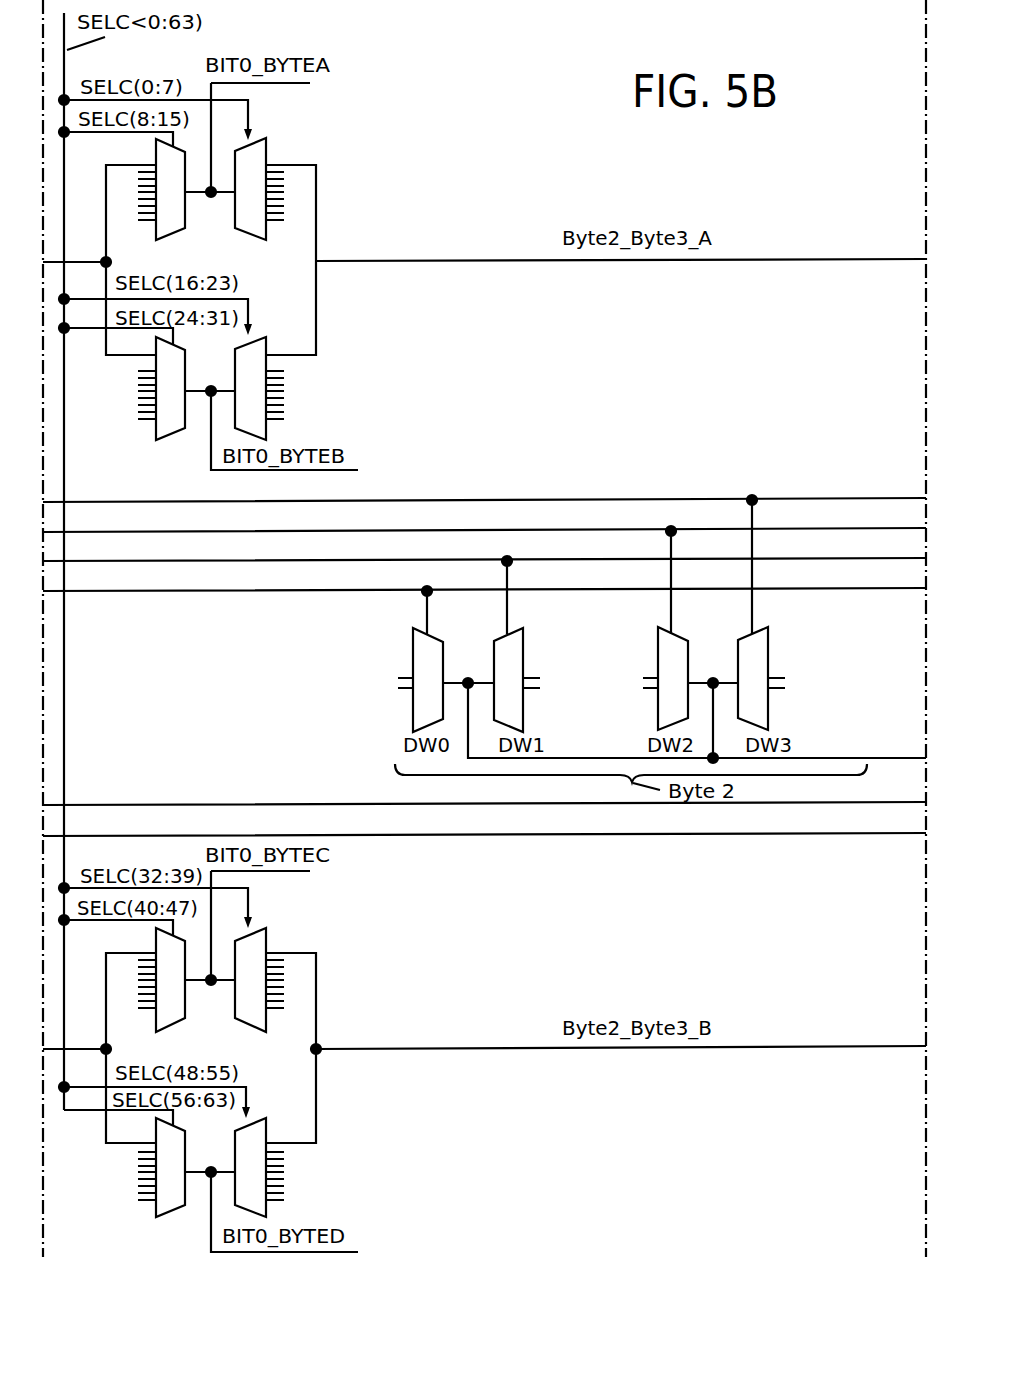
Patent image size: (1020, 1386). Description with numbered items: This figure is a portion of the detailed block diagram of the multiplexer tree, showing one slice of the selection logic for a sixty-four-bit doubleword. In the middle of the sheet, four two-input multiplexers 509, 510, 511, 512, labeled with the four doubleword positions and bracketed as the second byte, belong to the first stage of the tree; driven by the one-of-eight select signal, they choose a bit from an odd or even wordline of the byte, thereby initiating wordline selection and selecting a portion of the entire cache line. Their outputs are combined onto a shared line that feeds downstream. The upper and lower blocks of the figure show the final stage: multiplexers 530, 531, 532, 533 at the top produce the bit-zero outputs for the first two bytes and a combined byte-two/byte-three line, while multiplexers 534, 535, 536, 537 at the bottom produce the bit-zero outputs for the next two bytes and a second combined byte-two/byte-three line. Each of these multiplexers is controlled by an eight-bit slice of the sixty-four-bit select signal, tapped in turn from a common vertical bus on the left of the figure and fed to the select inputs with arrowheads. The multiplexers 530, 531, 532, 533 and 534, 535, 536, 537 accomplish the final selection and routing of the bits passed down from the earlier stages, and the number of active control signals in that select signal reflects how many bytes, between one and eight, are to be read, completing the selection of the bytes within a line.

The multiplexer 509 is at (412, 657).
The multiplexer 510 is at (523, 653).
The multiplexer 511 is at (655, 655).
The multiplexer 512 is at (770, 653).
The multiplexer 530 is at (190, 218).
The multiplexer 531 is at (247, 230).
The multiplexer 532 is at (175, 428).
The multiplexer 533 is at (260, 340).
The multiplexer 534 is at (153, 1018).
The multiplexer 535 is at (265, 1018).
The multiplexer 536 is at (155, 1210).
The multiplexer 537 is at (260, 1118).